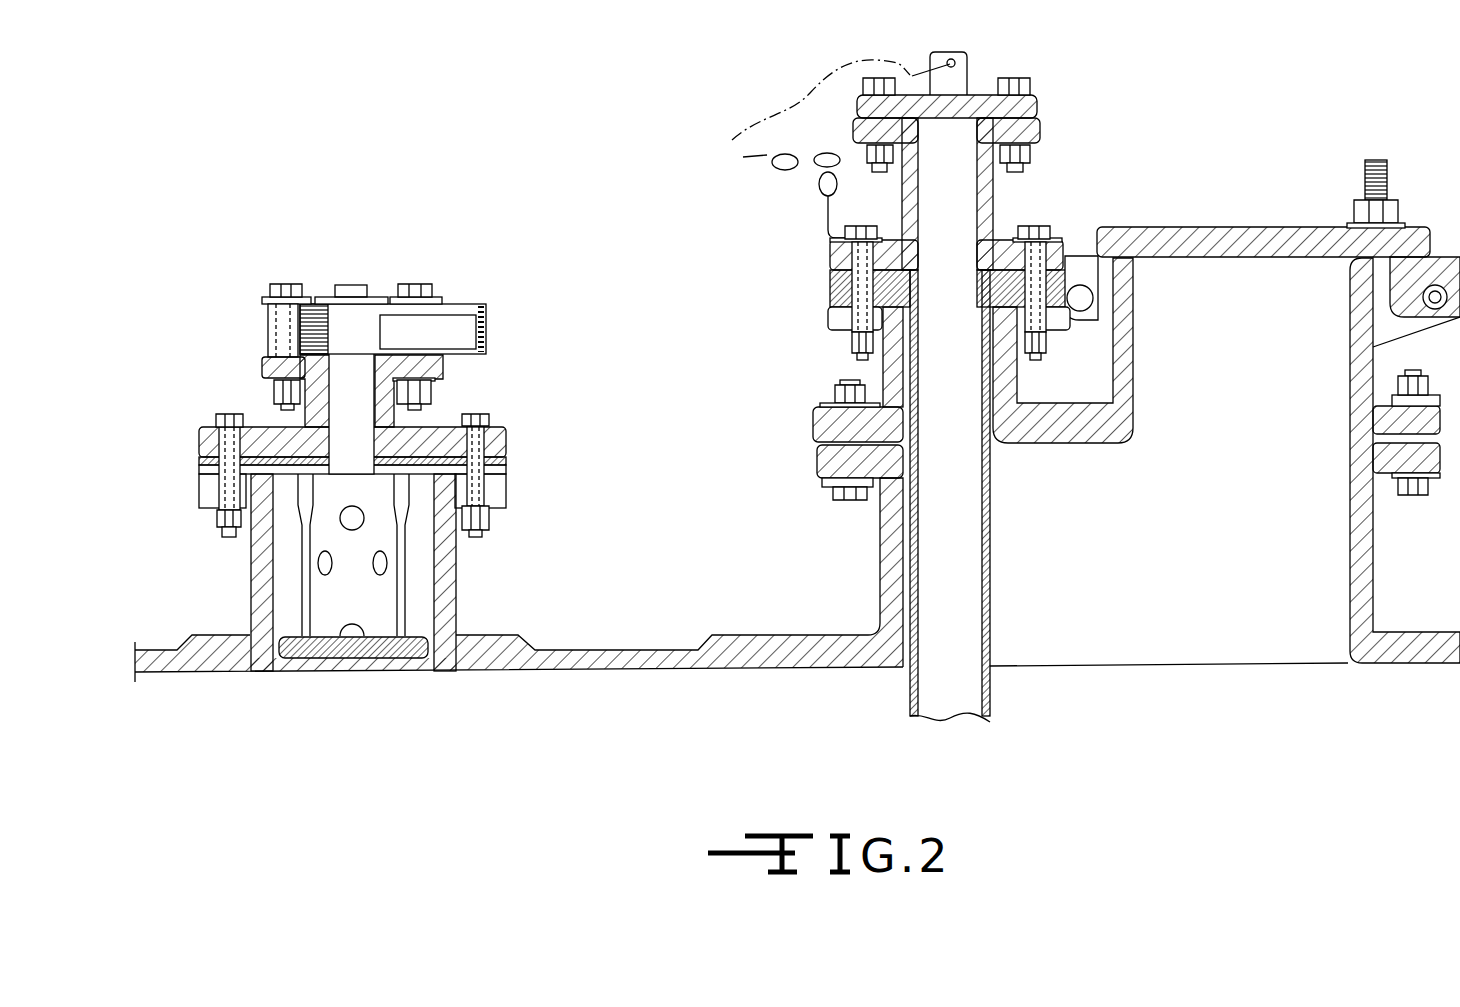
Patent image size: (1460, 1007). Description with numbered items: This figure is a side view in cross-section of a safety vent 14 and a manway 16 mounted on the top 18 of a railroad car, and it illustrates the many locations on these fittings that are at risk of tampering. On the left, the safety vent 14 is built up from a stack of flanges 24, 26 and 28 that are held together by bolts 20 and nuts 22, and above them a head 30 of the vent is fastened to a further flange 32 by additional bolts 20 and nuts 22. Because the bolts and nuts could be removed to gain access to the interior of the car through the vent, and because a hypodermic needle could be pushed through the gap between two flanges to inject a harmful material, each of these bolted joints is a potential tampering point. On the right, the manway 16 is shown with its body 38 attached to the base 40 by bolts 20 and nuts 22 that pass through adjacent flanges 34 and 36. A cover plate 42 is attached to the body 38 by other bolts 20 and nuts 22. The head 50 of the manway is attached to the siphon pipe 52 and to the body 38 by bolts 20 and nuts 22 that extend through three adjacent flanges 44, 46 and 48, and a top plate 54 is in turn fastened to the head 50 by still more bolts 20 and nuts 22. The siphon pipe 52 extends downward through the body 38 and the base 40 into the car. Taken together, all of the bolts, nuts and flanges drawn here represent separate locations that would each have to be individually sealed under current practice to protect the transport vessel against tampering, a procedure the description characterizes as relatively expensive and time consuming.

The safety vent 14 is at (220, 253).
The manway 16 is at (1292, 97).
The top 18 is at (610, 640).
The bolts 20 is at (440, 292).
The nuts 22 is at (268, 390).
The flange 24 is at (197, 441).
The flange 26 is at (199, 462).
The flange 28 is at (195, 482).
The head 30 is at (487, 322).
The flange 32 is at (443, 369).
The flange 34 is at (812, 420).
The flange 36 is at (815, 462).
The body 38 is at (892, 375).
The base 40 is at (880, 560).
The cover plate 42 is at (1228, 223).
The flange 44 is at (830, 240).
The flange 46 is at (832, 250).
The flange 48 is at (832, 312).
The head 50 is at (900, 205).
The siphon pipe 52 is at (918, 320).
The top plate 54 is at (977, 93).